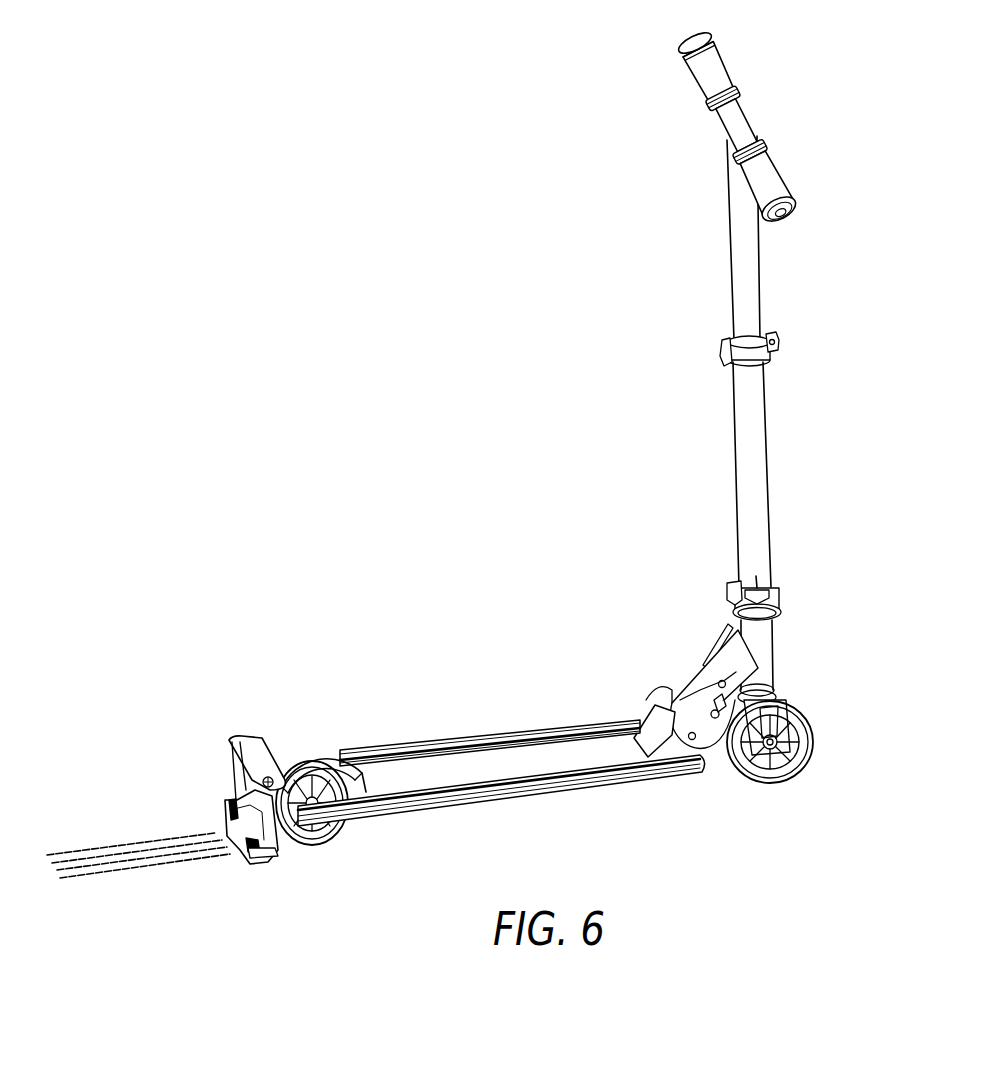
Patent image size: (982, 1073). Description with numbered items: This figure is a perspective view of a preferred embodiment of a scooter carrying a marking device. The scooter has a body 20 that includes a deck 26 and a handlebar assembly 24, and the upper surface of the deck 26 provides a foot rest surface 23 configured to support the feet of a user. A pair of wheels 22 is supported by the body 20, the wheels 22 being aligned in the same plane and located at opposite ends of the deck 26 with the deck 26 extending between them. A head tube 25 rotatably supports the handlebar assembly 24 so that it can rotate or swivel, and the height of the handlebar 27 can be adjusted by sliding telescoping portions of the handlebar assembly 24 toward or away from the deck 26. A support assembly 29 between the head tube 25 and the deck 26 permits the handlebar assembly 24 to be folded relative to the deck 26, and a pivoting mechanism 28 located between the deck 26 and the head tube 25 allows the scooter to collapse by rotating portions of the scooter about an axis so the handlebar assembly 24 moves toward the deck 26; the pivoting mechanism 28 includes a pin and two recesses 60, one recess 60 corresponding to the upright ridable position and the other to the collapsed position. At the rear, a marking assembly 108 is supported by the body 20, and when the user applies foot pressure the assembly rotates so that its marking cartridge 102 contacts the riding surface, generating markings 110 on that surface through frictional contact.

The body 20 is at (610, 824).
The wheels 22 is at (813, 735).
The foot rest surface 23 is at (519, 779).
The handlebar assembly 24 is at (785, 268).
The head tube 25 is at (777, 655).
The deck 26 is at (470, 738).
The handlebar 27 is at (711, 63).
The pivoting mechanism 28 is at (668, 697).
The support assembly 29 is at (706, 660).
The recesses 60 is at (715, 718).
The marking cartridge 102 is at (263, 858).
The marking assembly 108 is at (219, 759).
The markings 110 is at (146, 884).